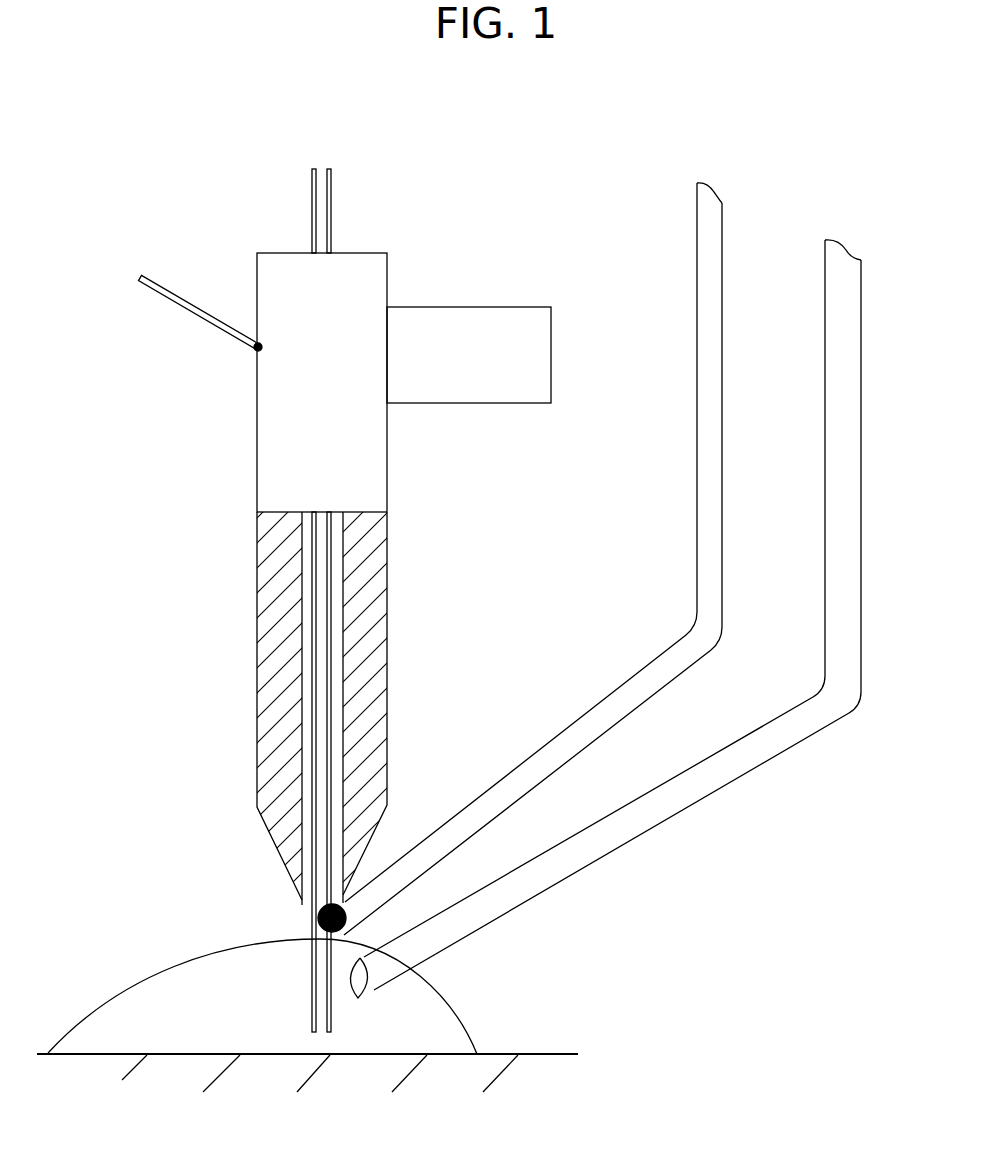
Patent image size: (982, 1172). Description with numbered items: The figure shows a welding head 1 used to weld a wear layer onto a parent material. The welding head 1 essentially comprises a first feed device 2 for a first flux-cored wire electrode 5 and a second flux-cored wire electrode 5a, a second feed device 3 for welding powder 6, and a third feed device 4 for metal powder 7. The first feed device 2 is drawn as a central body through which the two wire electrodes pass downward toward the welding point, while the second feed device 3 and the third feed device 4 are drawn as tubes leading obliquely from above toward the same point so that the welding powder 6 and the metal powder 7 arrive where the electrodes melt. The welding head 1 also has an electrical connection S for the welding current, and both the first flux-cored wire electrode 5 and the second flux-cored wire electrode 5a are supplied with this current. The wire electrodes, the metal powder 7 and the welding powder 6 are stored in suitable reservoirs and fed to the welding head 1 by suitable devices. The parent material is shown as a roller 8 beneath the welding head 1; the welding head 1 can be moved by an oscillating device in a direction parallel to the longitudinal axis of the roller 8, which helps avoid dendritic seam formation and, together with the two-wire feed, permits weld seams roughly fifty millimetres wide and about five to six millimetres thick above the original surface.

The welding head 1 is at (458, 203).
The first feed device 2 is at (360, 488).
The second feed device 3 is at (653, 818).
The third feed device 4 is at (523, 773).
The first flux-cored wire electrode 5 is at (307, 965).
The second flux-cored wire electrode 5a is at (333, 1020).
The welding powder 6 is at (440, 1020).
The metal powder 7 is at (315, 908).
The roller 8 is at (477, 1077).
The electrical connection S is at (188, 305).